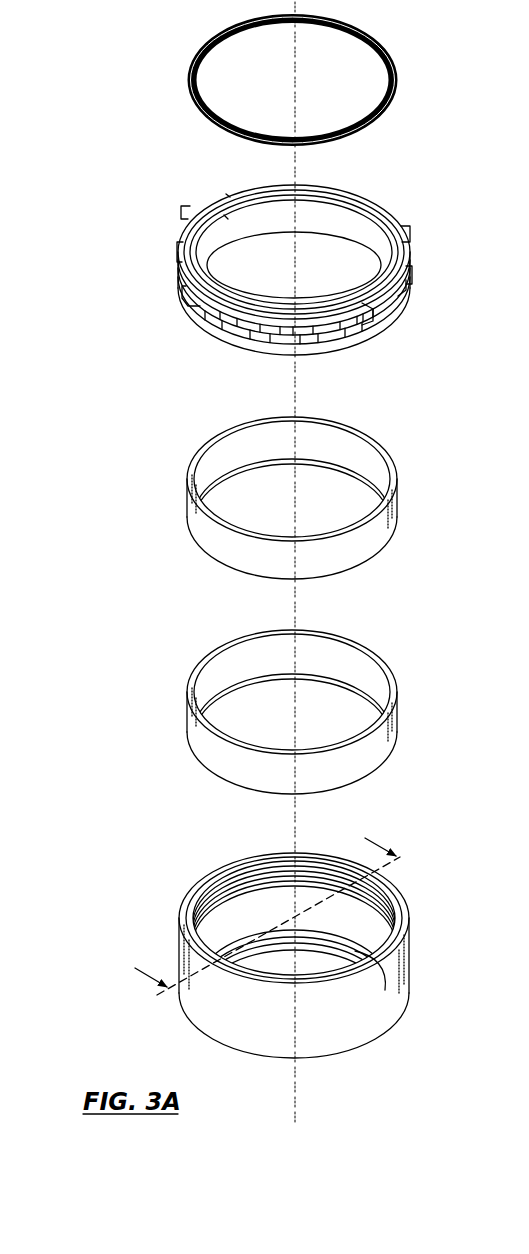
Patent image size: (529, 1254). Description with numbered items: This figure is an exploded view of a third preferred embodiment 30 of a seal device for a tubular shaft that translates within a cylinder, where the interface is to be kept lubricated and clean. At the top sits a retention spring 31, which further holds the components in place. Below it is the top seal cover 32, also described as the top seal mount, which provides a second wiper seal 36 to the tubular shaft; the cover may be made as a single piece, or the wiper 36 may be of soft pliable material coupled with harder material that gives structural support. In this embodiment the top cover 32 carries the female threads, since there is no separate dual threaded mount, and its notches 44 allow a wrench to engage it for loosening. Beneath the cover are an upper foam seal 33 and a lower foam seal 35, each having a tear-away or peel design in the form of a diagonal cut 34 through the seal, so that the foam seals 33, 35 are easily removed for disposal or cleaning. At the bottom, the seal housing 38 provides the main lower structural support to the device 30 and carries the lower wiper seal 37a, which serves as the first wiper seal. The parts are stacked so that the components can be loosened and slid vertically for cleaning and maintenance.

The third preferred embodiment 30 is at (109, 116).
The retention spring 31 is at (397, 80).
The top seal cover 32 is at (254, 257).
The second wiper seal 36 is at (227, 217).
The notches 44 is at (366, 308).
The upper foam seal 33 is at (321, 472).
The diagonal cut 34 is at (341, 453).
The lower foam seal 35 is at (385, 739).
The first wiper seal 37a is at (388, 980).
The seal housing 38 is at (284, 940).